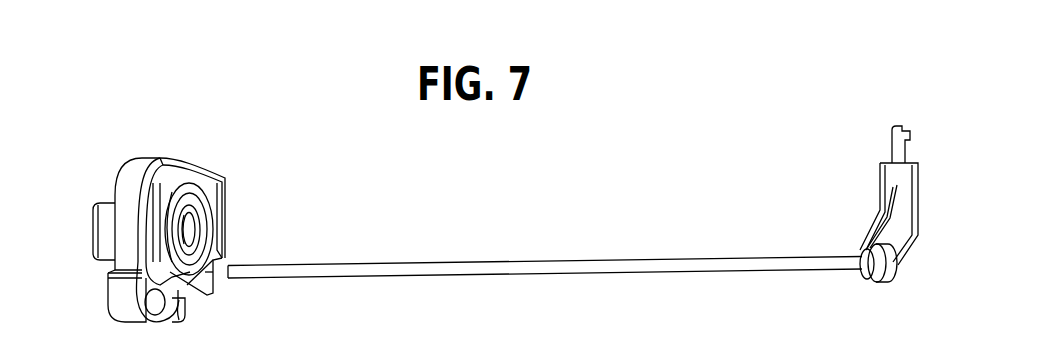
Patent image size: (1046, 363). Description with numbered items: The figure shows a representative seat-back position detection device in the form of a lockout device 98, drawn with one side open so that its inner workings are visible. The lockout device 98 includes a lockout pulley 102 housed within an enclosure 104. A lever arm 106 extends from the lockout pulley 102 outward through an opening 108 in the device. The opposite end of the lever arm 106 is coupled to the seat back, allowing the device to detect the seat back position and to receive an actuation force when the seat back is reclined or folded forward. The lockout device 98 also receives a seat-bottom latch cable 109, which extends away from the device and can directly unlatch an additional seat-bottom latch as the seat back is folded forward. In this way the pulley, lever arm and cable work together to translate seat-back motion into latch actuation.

The lockout device 98 is at (338, 182).
The lockout pulley 102 is at (195, 203).
The enclosure 104 is at (118, 167).
The lever arm 106 is at (168, 277).
The opening 108 is at (165, 140).
The seat-bottom latch cable 109 is at (660, 258).